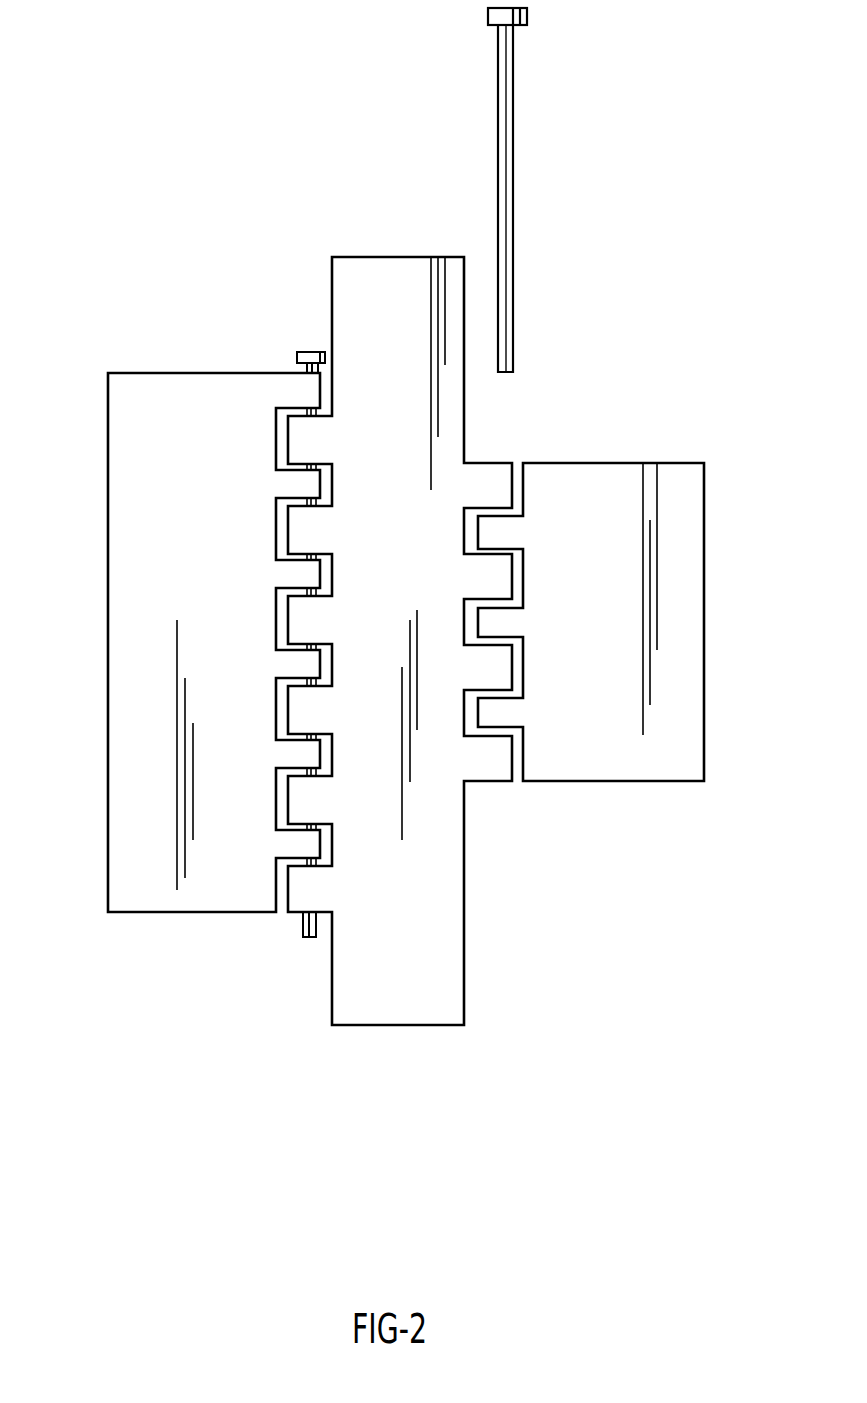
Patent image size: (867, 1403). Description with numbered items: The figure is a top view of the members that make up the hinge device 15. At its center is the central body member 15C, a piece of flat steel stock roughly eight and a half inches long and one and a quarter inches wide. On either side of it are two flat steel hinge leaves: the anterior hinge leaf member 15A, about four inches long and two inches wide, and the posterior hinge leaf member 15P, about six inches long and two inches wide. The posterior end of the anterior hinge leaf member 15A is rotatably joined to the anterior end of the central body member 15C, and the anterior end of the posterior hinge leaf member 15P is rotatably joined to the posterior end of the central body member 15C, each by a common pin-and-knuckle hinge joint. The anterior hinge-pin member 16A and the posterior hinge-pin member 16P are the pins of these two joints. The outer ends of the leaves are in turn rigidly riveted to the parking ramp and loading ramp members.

The hinge device 15 is at (350, 238).
The central body member 15C is at (332, 297).
The posterior hinge leaf member 15P is at (153, 373).
The anterior hinge leaf member 15A is at (683, 463).
The posterior hinge-pin member 16P is at (295, 353).
The anterior hinge-pin member 16A is at (513, 117).